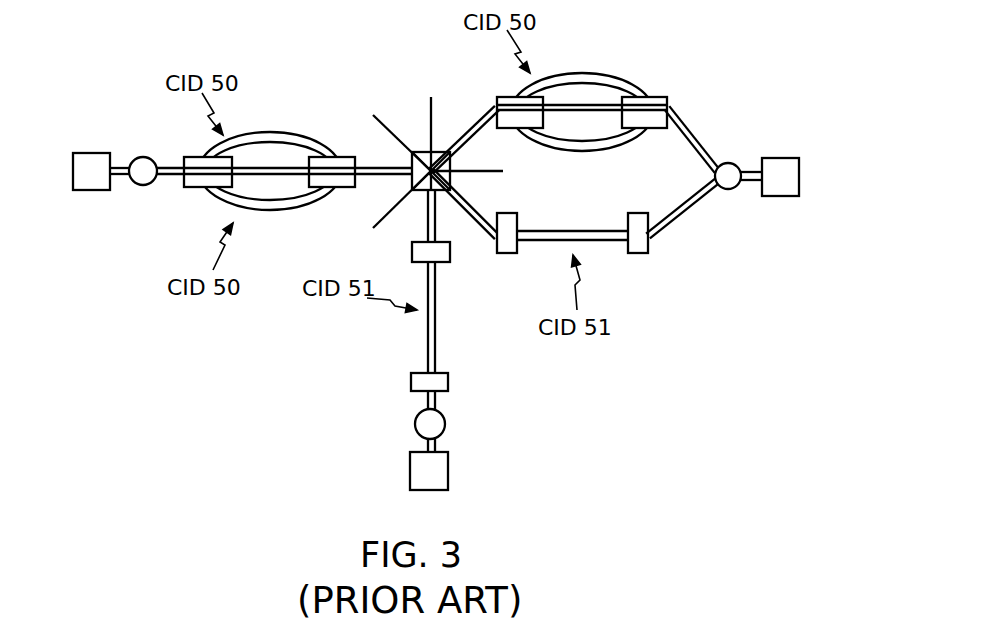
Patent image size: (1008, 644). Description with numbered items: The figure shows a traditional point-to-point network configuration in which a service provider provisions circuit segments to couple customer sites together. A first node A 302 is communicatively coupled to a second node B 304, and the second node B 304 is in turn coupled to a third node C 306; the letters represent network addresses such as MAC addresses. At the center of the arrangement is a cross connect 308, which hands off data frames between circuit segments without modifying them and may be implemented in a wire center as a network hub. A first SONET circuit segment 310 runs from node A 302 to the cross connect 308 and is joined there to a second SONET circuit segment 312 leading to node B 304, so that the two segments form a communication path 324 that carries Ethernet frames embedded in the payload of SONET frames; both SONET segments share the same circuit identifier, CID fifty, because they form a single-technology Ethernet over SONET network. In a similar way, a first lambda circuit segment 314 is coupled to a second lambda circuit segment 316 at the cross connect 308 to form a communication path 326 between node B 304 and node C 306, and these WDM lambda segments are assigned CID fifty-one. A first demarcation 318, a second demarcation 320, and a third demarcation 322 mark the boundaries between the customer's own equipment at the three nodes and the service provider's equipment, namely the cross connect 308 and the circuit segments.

The first node A 302 is at (93, 190).
The second node B 304 is at (780, 158).
The third node C 306 is at (448, 472).
The cross connect 308 is at (438, 138).
The first SONET circuit segment 310 is at (260, 133).
The second SONET circuit segment 312 is at (600, 73).
The first lambda circuit segment 314 is at (635, 253).
The second lambda circuit segment 316 is at (448, 387).
The first demarcation 318 is at (145, 157).
The second demarcation 320 is at (732, 190).
The third demarcation 322 is at (415, 424).
The communication path 324 is at (703, 118).
The communication path 326 is at (472, 223).